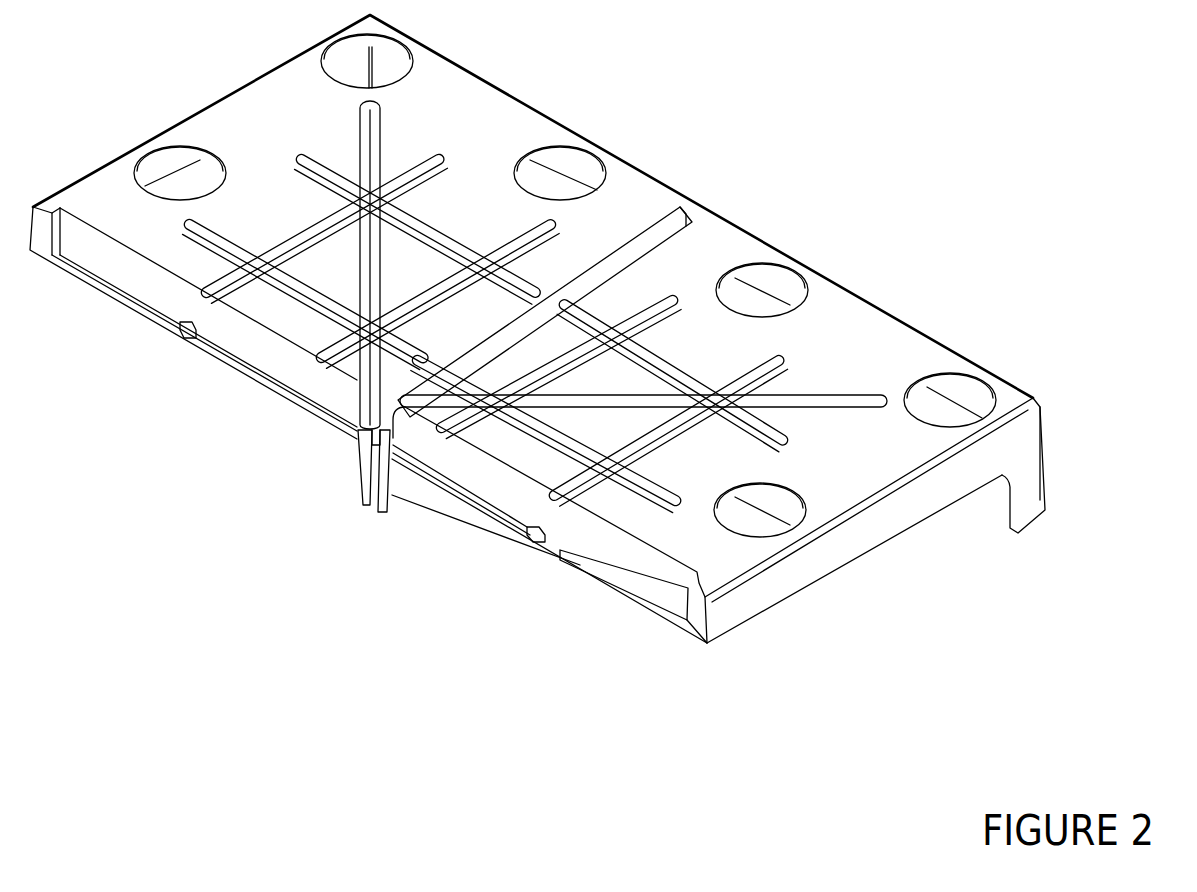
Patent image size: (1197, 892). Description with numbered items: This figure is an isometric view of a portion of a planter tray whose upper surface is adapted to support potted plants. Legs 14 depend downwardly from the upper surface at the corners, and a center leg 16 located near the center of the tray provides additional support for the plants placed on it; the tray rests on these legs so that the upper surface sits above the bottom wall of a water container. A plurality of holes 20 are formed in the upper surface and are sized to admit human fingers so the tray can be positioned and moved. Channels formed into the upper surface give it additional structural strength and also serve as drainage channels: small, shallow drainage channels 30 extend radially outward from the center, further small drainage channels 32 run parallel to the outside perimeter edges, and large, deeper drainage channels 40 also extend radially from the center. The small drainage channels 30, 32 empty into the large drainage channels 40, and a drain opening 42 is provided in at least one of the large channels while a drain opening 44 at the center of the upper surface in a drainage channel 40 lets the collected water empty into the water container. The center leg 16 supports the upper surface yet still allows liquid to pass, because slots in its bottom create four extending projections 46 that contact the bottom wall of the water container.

The leg 14 is at (1027, 502).
The center leg 16 is at (392, 495).
The hole 20 is at (155, 155).
The drainage channel 30 is at (368, 127).
The drainage channel 32 is at (423, 222).
The large drainage channel 40 is at (632, 247).
The drain opening 42 is at (197, 335).
The drain opening 44 is at (373, 438).
The projection 46 is at (365, 505).